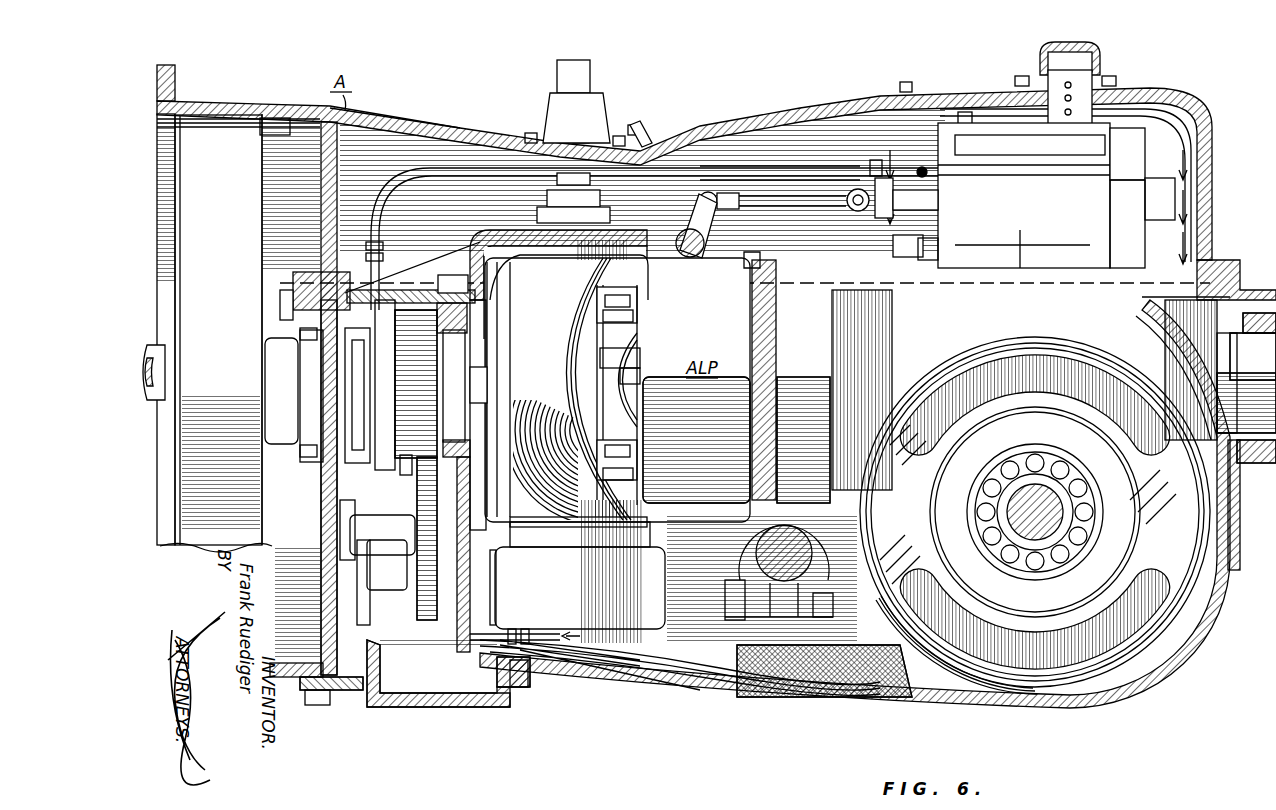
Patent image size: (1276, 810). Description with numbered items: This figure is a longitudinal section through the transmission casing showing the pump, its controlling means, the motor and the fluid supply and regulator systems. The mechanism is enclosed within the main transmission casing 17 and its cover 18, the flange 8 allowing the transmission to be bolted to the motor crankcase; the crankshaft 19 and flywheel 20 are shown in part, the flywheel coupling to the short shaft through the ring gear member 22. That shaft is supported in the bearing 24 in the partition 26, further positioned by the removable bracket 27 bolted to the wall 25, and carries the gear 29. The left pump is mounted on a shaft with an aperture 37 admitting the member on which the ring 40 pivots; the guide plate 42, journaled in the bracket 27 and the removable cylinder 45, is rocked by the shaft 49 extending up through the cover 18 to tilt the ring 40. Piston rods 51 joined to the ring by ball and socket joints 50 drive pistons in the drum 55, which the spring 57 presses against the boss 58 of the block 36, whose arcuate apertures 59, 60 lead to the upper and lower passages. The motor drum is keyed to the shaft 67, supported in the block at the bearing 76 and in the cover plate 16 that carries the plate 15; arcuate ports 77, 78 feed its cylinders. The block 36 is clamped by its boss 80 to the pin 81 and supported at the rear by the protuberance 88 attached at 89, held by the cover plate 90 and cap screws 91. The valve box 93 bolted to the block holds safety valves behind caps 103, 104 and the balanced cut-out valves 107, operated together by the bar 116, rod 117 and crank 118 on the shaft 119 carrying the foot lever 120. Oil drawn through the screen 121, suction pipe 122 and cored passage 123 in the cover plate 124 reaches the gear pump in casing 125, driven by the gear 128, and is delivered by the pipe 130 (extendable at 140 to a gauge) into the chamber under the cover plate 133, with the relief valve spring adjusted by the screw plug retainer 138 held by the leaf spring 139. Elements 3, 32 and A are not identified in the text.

The flange 8 is at (178, 88).
The flywheel 20 is at (203, 272).
The cover 18 is at (396, 125).
The shaft 49 is at (556, 80).
The foot lever 120 is at (628, 125).
The lead 3 is at (640, 126).
The pipe 130 is at (706, 166).
The crank 118 is at (698, 210).
The rod 117 is at (760, 206).
The shaft 119 is at (694, 258).
The cover plate 16 is at (846, 200).
The plate 15 is at (876, 170).
The main transmission casing 17 is at (894, 252).
The cover plate 133 is at (962, 112).
The screw plug retainer 138 is at (1040, 70).
The leaf spring 139 is at (1105, 82).
The valve box 93 is at (1050, 226).
The cap 104 is at (1152, 138).
The balanced valve 107 is at (1160, 188).
The interconnecting bar 116 is at (885, 203).
The pipe extension 140 is at (924, 175).
The cap 103 is at (940, 252).
The bracket 27 is at (452, 272).
The guide plate 42 is at (569, 277).
The block 36 is at (744, 258).
The piston rods 51 is at (622, 312).
The arcuate aperture 59 is at (764, 288).
The bearing 24 is at (470, 360).
The ring 40 is at (572, 336).
The ball and socket joints 50 is at (646, 323).
The boss 58 is at (756, 302).
The aperture 37 is at (616, 358).
The drum 55 is at (710, 340).
The bearing 32 is at (492, 392).
The spring 57 is at (638, 372).
The attachment 89 is at (1252, 314).
The protuberance 88 is at (1230, 366).
The cover plate 90 is at (1275, 340).
The cap screws 91 is at (1275, 372).
The crankshaft 19 is at (162, 372).
The ring gear member 22 is at (277, 372).
The bearing 76 is at (1012, 466).
The shaft 67 is at (1045, 508).
The pin 81 is at (848, 526).
The arcuate port 77 is at (1138, 446).
The arcuate port 78 is at (1140, 562).
The wall 25 is at (325, 488).
The gear 29 is at (402, 466).
The partition 26 is at (435, 538).
The boss 80 is at (748, 542).
The arcuate aperture 60 is at (762, 544).
The cylinder 45 is at (568, 535).
The gear 128 is at (496, 583).
The casing 125 is at (362, 698).
The cover plate 124 is at (432, 703).
The cored passage 123 is at (507, 700).
The suction pipe 122 is at (712, 700).
The screen 121 is at (852, 700).
The generator unit A is at (395, 118).